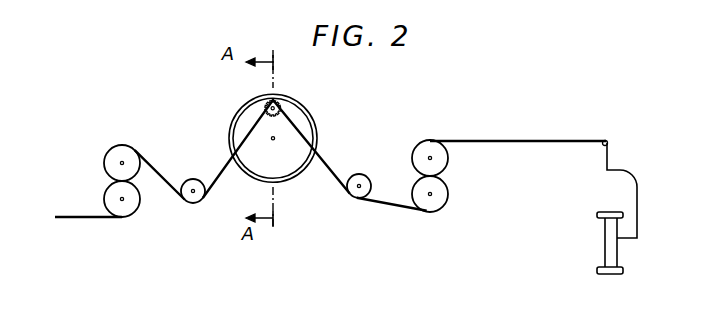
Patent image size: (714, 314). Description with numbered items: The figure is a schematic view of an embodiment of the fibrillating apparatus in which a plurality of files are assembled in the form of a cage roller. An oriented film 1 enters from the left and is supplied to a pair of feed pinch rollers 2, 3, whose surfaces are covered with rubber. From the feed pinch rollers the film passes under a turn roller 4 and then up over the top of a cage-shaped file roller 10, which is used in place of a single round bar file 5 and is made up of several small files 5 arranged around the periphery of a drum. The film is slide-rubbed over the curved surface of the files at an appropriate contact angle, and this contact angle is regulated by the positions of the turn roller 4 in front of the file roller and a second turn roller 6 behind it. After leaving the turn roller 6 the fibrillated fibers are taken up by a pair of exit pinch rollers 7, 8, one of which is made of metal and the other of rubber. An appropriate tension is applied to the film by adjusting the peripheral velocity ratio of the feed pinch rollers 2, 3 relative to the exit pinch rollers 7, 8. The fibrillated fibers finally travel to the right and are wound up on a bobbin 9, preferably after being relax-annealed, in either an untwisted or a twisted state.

The oriented film 1 is at (65, 218).
The feed pinch roller 2 is at (113, 198).
The feed pinch roller 3 is at (110, 152).
The turn roller 4 is at (193, 179).
The bar file 5 is at (243, 113).
The turn roller 6 is at (358, 173).
The exit pinch roller 7 is at (419, 186).
The exit pinch roller 8 is at (421, 143).
The bobbin 9 is at (607, 246).
The cage-shaped file roller 10 is at (304, 110).